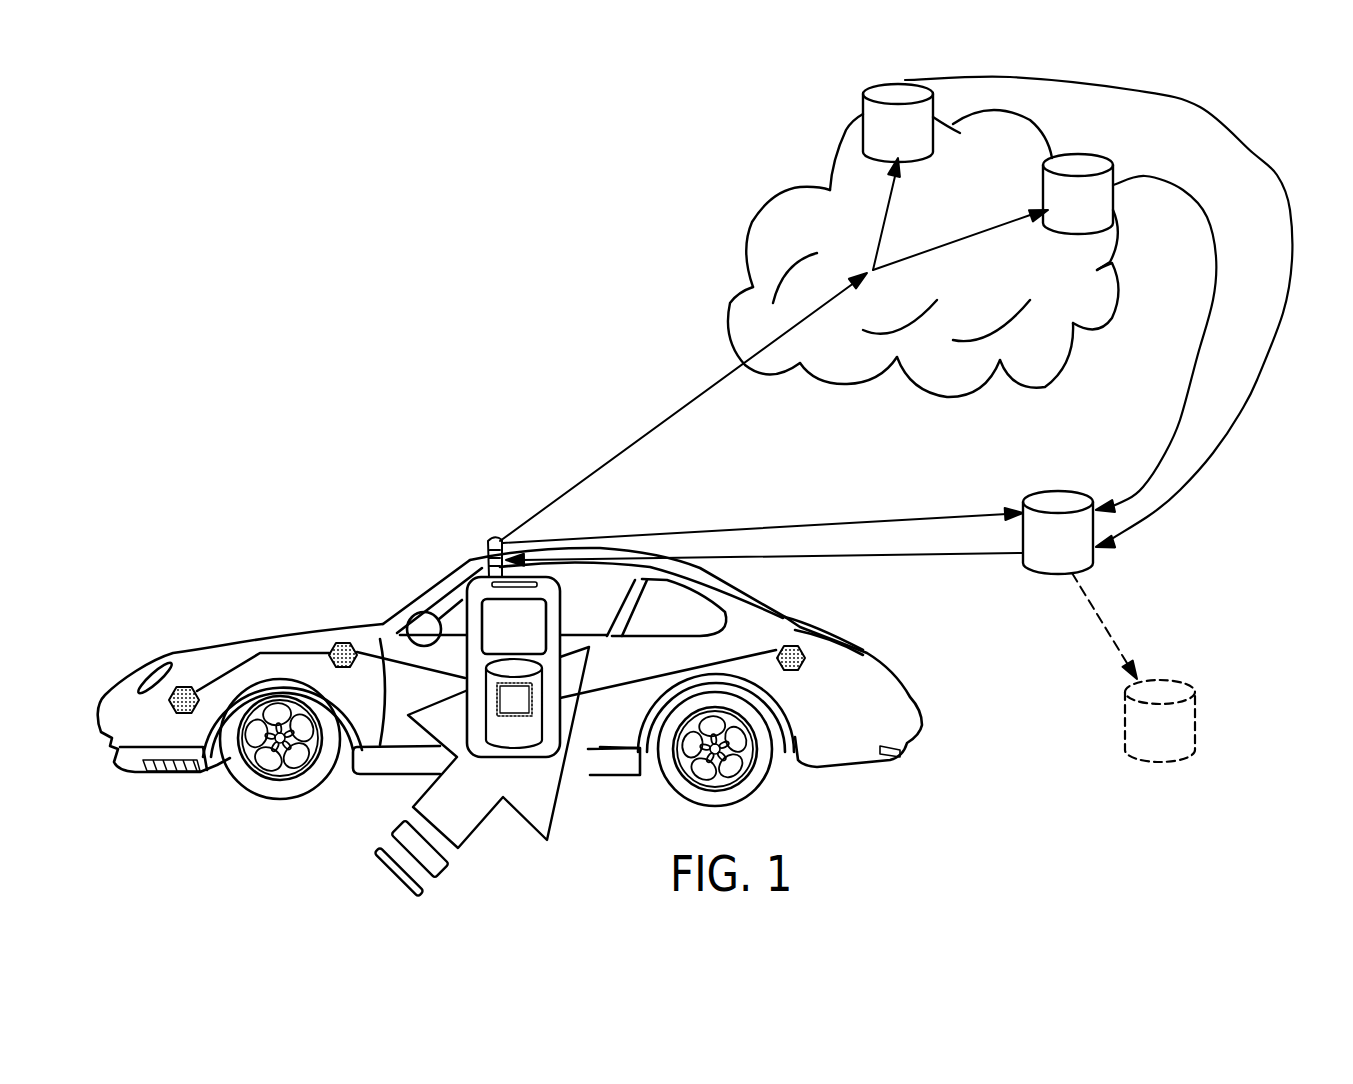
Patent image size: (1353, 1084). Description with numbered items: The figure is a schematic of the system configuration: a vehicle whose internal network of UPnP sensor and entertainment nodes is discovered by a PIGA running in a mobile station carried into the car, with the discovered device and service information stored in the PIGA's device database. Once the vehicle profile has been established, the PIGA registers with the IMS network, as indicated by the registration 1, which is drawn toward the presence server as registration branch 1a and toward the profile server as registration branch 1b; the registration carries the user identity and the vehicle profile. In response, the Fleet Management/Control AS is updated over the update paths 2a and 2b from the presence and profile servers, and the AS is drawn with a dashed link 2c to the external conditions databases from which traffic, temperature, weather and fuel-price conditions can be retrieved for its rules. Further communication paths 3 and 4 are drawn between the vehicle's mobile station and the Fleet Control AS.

The registration with the IMS network 1 is at (683, 407).
The registration path to the presence server 1a is at (878, 214).
The registration path to the profile server 1b is at (965, 240).
The update path from the presence server 2a is at (1098, 312).
The update path from the profile server 2b is at (1164, 344).
The optional link from service center to external unit 2c is at (1109, 626).
The communication link from vehicle to service center 3 is at (763, 517).
The communication link from service center to vehicle 4 is at (764, 570).